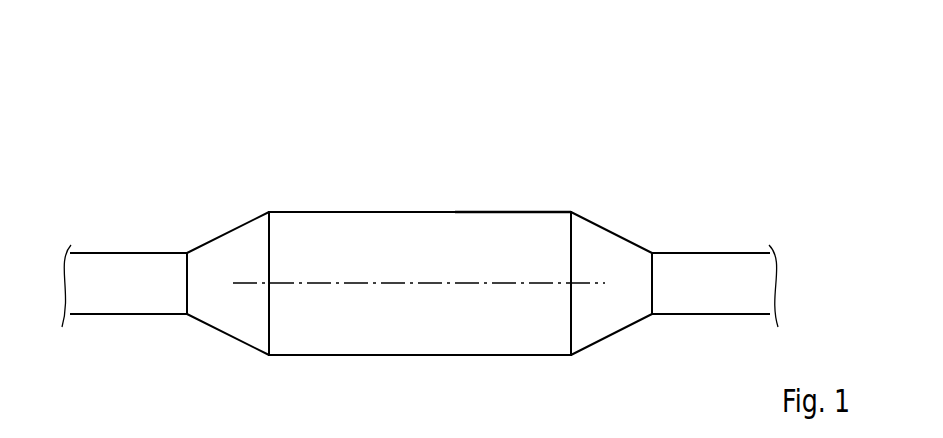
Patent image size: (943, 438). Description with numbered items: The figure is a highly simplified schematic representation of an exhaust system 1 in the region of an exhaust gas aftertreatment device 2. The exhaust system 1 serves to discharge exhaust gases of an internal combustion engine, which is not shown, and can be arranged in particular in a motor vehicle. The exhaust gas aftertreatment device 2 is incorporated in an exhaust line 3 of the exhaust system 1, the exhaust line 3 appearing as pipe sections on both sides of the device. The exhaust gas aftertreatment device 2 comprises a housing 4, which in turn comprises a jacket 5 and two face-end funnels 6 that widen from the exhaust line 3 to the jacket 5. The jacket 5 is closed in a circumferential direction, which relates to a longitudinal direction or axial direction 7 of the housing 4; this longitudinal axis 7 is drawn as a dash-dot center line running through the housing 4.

The exhaust system 1 is at (713, 155).
The exhaust gas aftertreatment device 2 is at (520, 212).
The exhaust line 3 is at (128, 270).
The housing 4 is at (453, 212).
The jacket 5 is at (350, 230).
The face-end funnels 6 is at (232, 252).
The longitudinal axis 7 is at (440, 283).